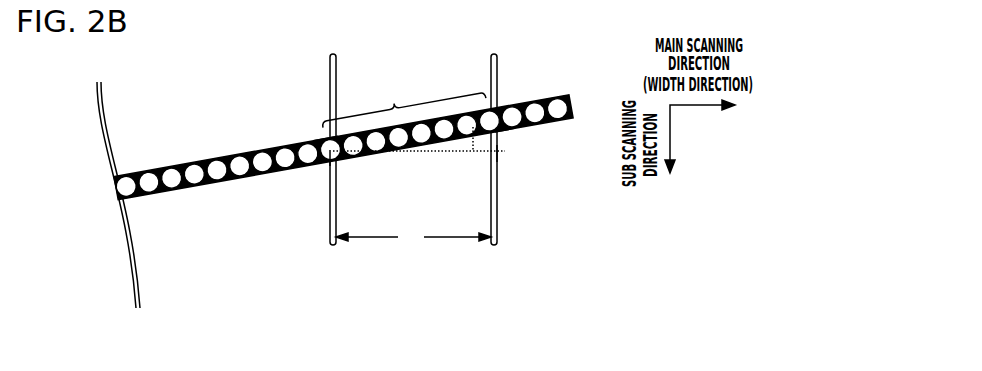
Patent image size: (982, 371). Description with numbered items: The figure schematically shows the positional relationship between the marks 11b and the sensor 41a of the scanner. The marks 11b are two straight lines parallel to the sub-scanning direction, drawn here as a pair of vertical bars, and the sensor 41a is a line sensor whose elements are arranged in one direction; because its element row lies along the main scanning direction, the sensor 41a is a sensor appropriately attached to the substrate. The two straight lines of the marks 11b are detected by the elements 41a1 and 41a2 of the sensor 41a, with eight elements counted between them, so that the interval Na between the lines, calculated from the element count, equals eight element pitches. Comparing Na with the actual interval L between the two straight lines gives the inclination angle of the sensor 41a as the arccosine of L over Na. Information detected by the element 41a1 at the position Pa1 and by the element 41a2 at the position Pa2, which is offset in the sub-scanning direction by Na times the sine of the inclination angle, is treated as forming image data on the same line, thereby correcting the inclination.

The marks 11b is at (336, 78).
The sensor 41a is at (197, 186).
The element 41a1 is at (325, 139).
The element 41a2 is at (502, 132).
The position Pa1 is at (323, 164).
The position Pa2 is at (503, 163).
The interval Na is at (403, 101).
The actual interval L is at (413, 239).